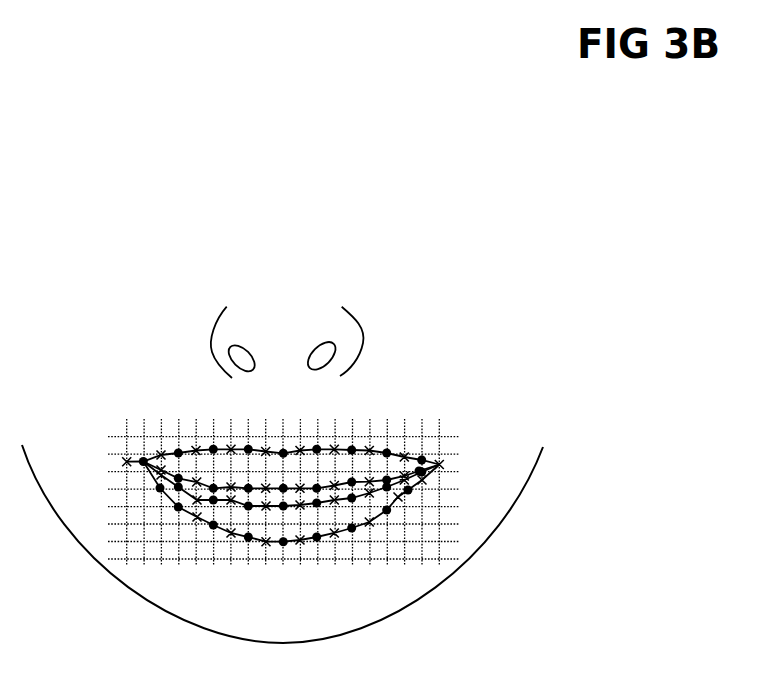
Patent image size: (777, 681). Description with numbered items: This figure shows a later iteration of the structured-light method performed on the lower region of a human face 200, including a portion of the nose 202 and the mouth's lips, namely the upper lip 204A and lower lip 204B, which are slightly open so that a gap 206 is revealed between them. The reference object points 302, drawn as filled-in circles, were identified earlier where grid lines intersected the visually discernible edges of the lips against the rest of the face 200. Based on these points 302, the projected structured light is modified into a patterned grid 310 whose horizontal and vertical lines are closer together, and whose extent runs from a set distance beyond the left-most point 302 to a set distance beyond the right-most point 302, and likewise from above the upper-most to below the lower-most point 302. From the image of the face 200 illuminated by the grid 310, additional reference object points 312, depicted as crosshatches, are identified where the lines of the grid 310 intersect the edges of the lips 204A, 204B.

The human face 200 is at (510, 485).
The nose 202 is at (363, 332).
The upper lip 204A is at (410, 453).
The lower lip 204B is at (257, 543).
The gap between the lips 206 is at (410, 483).
The reference object points 302 is at (283, 543).
The patterned grid 310 is at (127, 420).
The additional reference object points 312 is at (202, 515).